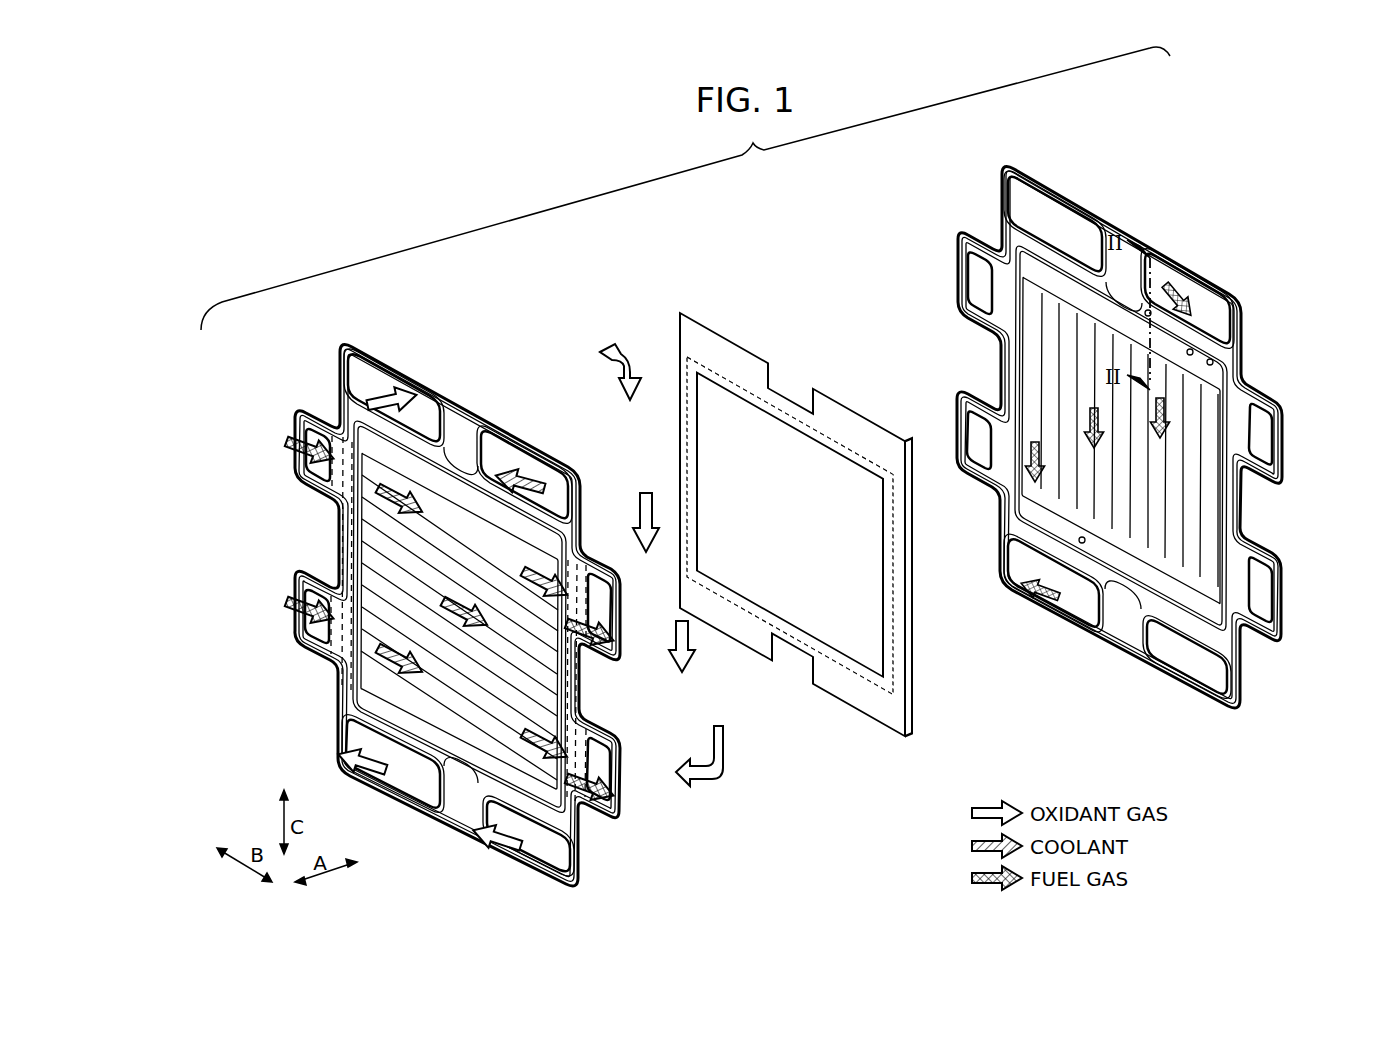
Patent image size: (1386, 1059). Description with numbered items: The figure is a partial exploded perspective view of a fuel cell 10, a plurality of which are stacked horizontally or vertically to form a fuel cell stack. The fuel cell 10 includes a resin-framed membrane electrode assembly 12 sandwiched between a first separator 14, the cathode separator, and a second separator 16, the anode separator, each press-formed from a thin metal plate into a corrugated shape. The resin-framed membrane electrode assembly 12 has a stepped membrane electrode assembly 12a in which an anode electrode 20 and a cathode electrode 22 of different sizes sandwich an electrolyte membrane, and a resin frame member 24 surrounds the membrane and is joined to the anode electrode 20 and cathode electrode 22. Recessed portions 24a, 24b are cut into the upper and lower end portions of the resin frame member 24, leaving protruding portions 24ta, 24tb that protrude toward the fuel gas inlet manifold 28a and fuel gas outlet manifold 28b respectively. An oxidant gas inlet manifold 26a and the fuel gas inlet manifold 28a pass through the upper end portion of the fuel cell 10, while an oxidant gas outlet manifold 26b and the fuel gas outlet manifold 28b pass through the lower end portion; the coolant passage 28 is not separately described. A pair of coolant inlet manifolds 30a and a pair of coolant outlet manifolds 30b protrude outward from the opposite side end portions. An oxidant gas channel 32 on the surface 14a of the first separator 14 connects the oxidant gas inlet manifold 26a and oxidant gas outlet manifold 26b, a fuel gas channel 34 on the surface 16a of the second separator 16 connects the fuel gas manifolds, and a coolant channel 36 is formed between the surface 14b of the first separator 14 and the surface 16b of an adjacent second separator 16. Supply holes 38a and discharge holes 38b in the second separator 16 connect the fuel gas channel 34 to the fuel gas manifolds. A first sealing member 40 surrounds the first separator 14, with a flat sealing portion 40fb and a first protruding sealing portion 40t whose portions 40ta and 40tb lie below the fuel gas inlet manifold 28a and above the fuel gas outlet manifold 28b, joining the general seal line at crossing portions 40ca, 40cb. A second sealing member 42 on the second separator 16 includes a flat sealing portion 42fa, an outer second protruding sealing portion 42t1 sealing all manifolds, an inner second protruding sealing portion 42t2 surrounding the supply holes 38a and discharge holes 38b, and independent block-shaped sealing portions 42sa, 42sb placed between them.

The fuel cell 10 is at (742, 201).
The resin-framed membrane electrode assembly 12 is at (681, 312).
The membrane electrode assembly 12a is at (725, 390).
The first separator 14 is at (350, 338).
The surface of the first separator 14a is at (350, 522).
The surface of the first separator 14b is at (348, 560).
The second separator 16 is at (1243, 287).
The surface of the second separator 16a is at (1020, 383).
The surface of the second separator 16b is at (1020, 362).
The anode electrode 20 is at (895, 652).
The cathode electrode 22 is at (863, 655).
The resin frame member 24 is at (712, 622).
The recessed portion 24a is at (790, 392).
The recessed portion 24b is at (791, 646).
The protruding portion 24ta is at (860, 432).
The protruding portion 24tb is at (725, 627).
The oxidant gas inlet manifold 26a is at (380, 368).
The oxidant gas outlet manifold 26b is at (535, 853).
The coolant passage 28 is at (532, 460).
The fuel gas inlet manifold 28a is at (1175, 272).
The fuel gas outlet manifold 28b is at (392, 772).
The coolant inlet manifolds 30a is at (312, 422).
The coolant outlet manifolds 30b is at (605, 652).
The oxidant gas channel 32 is at (440, 500).
The fuel gas channel 34 is at (1168, 395).
The coolant channel 36 is at (372, 650).
The supply holes 38a is at (1209, 366).
The discharge holes 38b is at (1081, 544).
The first sealing member 40 is at (440, 378).
The crossing portions 40ca is at (468, 502).
The crossing portions 40cb is at (366, 665).
The first protruding sealing portion 40ta is at (510, 520).
The first protruding sealing portion 40tb is at (409, 700).
The first protruding sealing portion 40t is at (575, 535).
The flat sealing portion 40fb is at (543, 517).
The second sealing member 42 is at (1110, 210).
The second protruding sealing portion 42t1 is at (1135, 262).
The second protruding sealing portion 42t2 is at (1232, 369).
The flat sealing portion 42fa is at (1202, 342).
The block-shaped sealing portions 42sa is at (1145, 315).
The block-shaped sealing portions 42sb is at (1010, 517).